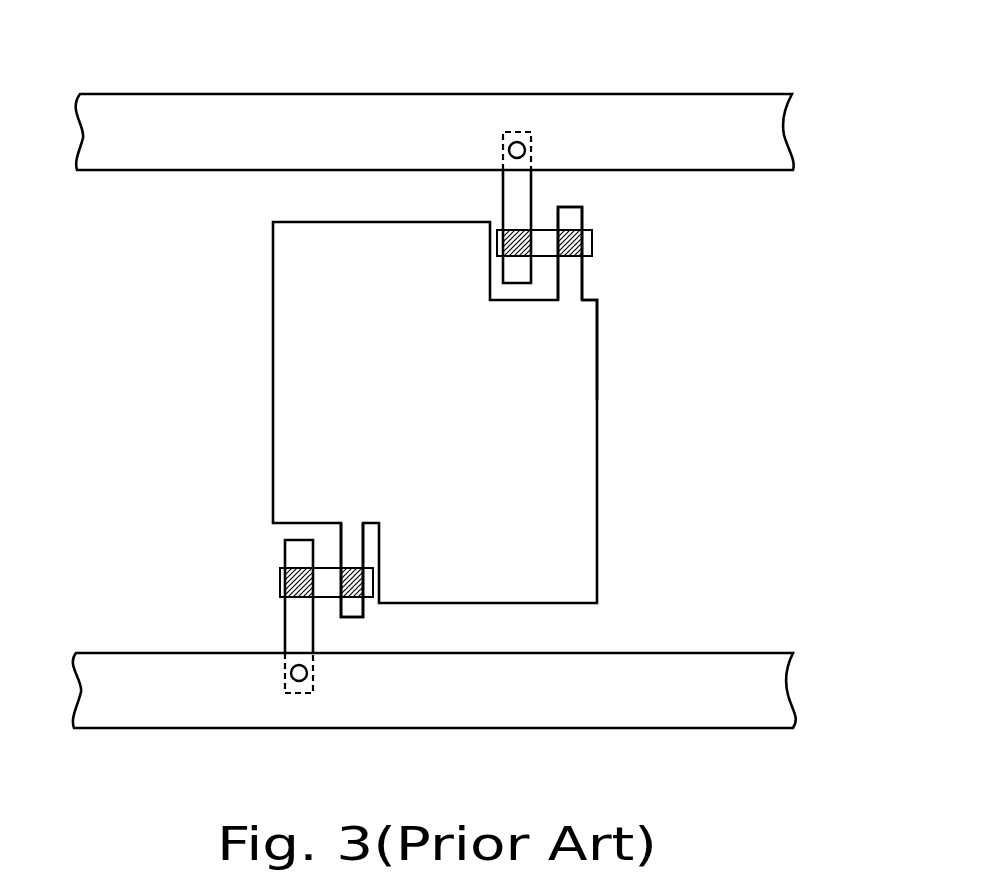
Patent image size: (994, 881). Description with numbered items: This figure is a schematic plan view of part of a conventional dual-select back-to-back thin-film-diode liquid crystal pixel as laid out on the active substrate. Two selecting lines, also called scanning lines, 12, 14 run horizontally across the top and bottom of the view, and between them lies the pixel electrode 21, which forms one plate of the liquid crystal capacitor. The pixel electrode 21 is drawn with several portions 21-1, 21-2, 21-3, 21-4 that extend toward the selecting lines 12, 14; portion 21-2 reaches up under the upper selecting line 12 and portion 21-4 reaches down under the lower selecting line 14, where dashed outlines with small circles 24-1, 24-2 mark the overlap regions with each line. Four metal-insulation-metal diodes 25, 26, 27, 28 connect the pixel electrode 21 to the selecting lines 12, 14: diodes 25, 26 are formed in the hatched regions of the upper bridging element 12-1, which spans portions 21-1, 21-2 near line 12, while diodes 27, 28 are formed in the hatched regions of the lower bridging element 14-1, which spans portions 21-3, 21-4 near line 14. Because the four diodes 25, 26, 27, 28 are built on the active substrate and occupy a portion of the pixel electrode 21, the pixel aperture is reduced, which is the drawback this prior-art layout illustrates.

The selecting line 12 is at (124, 110).
The selecting line 14 is at (122, 708).
The pixel electrode 21 is at (278, 380).
The first portion of conductive pattern 21-1 is at (572, 286).
The second portion of conductive pattern 21-2 is at (511, 190).
The third portion of conductive pattern 21-3 is at (360, 606).
The fourth portion of conductive pattern 21-4 is at (297, 628).
The first contact hole 24-1 is at (517, 134).
The second contact hole 24-2 is at (298, 684).
The metal-insulation-metal diode 25 is at (518, 233).
The metal-insulation-metal diode 26 is at (583, 221).
The metal-insulation-metal diode 27 is at (341, 598).
The metal-insulation-metal diode 28 is at (286, 568).
The first bridge electrode 12-1 is at (586, 243).
The second bridge electrode 14-1 is at (283, 581).